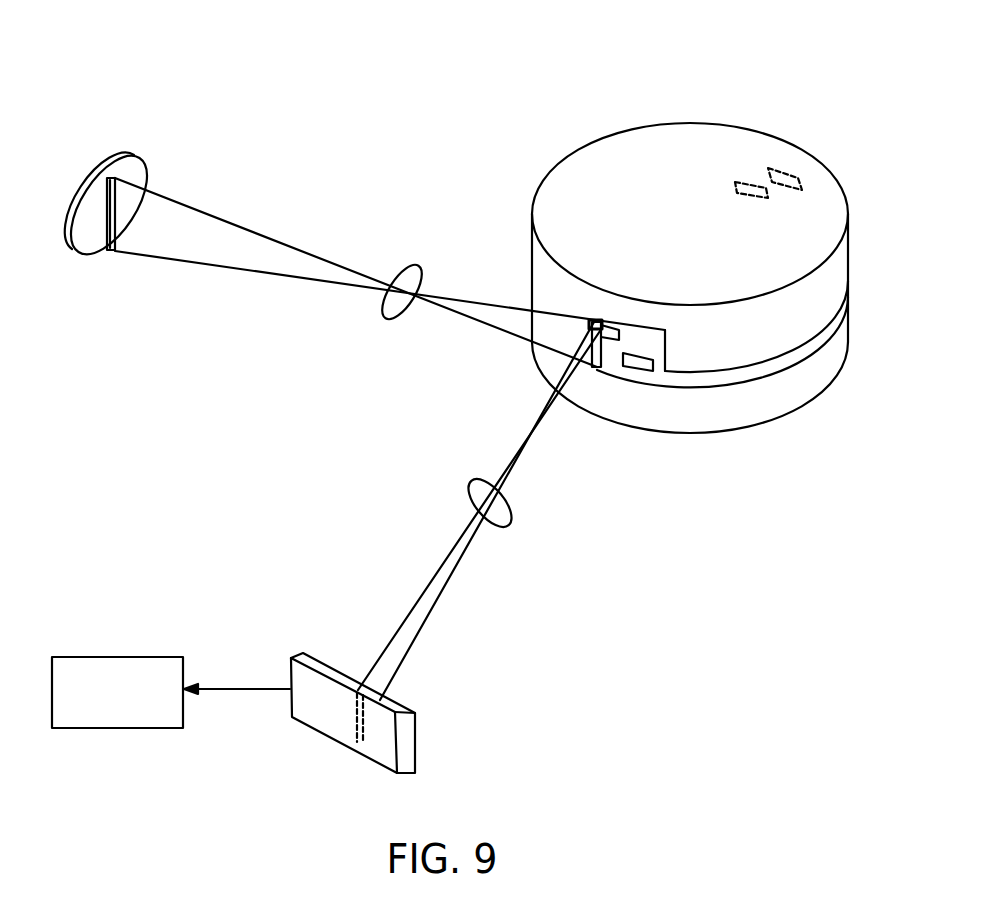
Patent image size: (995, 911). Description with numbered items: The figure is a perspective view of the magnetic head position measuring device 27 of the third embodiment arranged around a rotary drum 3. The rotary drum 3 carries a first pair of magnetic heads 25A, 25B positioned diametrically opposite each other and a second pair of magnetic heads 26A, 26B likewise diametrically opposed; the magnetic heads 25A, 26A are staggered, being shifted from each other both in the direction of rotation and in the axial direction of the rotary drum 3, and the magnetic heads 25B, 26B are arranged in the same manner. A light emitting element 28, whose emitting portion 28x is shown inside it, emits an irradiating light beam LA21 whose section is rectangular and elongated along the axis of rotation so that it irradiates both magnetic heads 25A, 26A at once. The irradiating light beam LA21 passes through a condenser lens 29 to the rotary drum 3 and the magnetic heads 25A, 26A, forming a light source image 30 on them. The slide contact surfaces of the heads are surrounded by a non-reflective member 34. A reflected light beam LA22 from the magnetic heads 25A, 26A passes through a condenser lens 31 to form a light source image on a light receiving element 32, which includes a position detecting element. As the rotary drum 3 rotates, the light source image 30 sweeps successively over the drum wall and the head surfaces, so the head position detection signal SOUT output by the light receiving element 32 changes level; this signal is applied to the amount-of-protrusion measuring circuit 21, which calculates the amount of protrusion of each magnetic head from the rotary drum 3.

The magnetic head position measuring device 27 is at (303, 78).
The light emitting element 28 is at (119, 160).
The light emitting element 28x is at (118, 179).
The irradiating light beam LA21 is at (194, 265).
The condenser lens 29 is at (400, 262).
The rotary drum 3 is at (848, 340).
The non-reflective member 34 is at (652, 340).
The light source image 30 is at (594, 320).
The magnetic head 25A is at (601, 370).
The magnetic head 26A is at (648, 372).
The magnetic head 25B is at (795, 178).
The magnetic head 26B is at (733, 182).
The reflected light beam LA22 is at (407, 610).
The condenser lens 31 is at (506, 517).
The light receiving element 32 is at (416, 730).
The head position detection signal SOUT is at (250, 689).
The amount-of-protrusion measuring circuit 21 is at (85, 729).